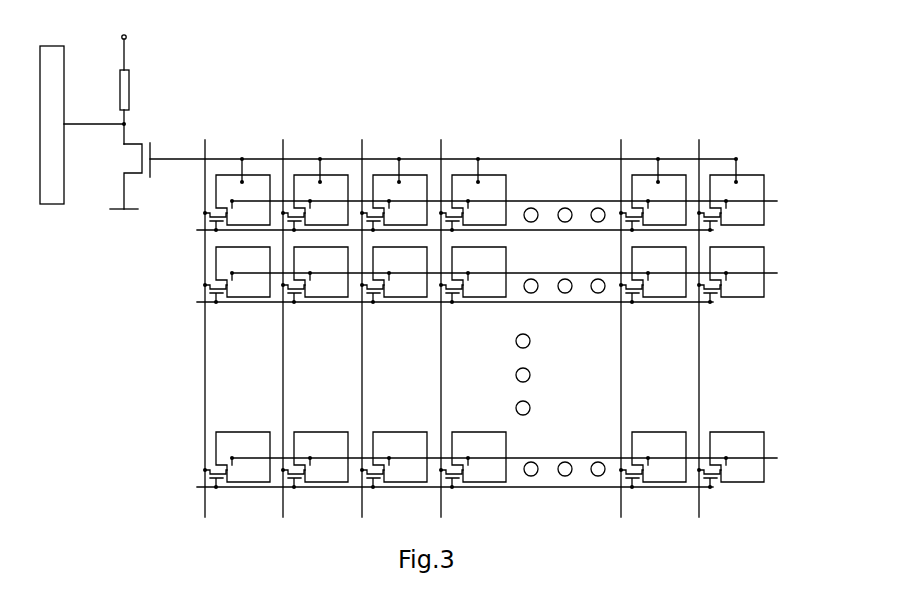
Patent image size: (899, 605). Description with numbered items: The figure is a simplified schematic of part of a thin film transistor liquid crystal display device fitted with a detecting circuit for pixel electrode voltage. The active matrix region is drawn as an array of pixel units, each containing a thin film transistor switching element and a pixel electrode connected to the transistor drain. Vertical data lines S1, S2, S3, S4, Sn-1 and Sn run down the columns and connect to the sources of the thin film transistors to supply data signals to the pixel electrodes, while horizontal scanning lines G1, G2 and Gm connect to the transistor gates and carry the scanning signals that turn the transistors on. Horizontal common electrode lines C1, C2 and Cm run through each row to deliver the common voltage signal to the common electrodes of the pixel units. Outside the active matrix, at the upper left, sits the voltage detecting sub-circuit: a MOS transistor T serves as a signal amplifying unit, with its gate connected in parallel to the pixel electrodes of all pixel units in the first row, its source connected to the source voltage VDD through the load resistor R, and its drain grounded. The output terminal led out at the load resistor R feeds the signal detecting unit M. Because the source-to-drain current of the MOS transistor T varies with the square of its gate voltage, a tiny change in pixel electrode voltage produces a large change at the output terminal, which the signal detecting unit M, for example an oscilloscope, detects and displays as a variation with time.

The signal detecting unit M is at (53, 45).
The source voltage VDD is at (125, 42).
The load resistor R is at (114, 107).
The MOS transistor T is at (127, 176).
The data line S1 is at (207, 319).
The data line S2 is at (285, 319).
The data line S3 is at (364, 319).
The data line S4 is at (443, 319).
The data line Sn-1 is at (626, 319).
The data line Sn is at (701, 319).
The scanning line G1 is at (442, 231).
The scanning line G2 is at (442, 303).
The scanning line Gm is at (440, 487).
The common electrode line C1 is at (515, 202).
The common electrode line C2 is at (515, 274).
The common electrode line Cm is at (517, 459).